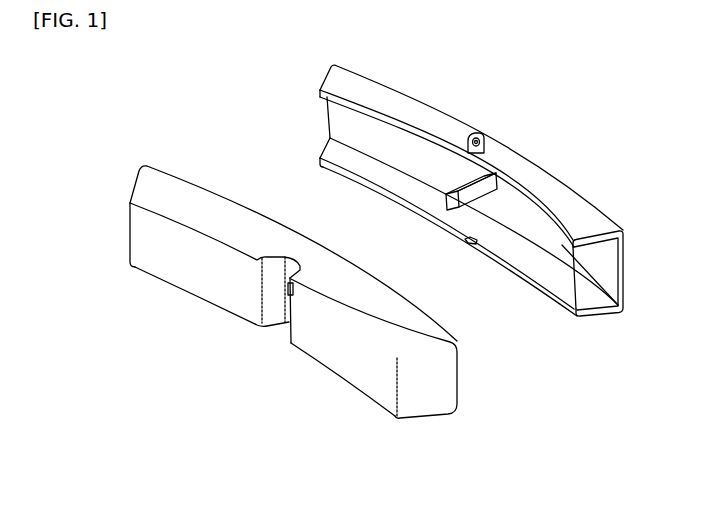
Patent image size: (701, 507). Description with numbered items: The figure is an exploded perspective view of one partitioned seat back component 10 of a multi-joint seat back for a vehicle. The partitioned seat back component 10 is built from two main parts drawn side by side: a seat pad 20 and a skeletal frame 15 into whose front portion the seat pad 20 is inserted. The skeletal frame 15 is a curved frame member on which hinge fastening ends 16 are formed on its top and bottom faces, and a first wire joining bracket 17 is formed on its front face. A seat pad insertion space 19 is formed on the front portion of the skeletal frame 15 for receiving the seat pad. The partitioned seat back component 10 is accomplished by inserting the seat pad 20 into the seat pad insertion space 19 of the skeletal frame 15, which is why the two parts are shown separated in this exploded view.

The partitioned seat back component 10 is at (381, 273).
The skeletal frame 15 is at (470, 248).
The hinge fastening ends 16 is at (472, 238).
The first wire joining bracket 17 is at (465, 185).
The seat pad insertion space 19 is at (562, 245).
The seat pad 20 is at (340, 311).